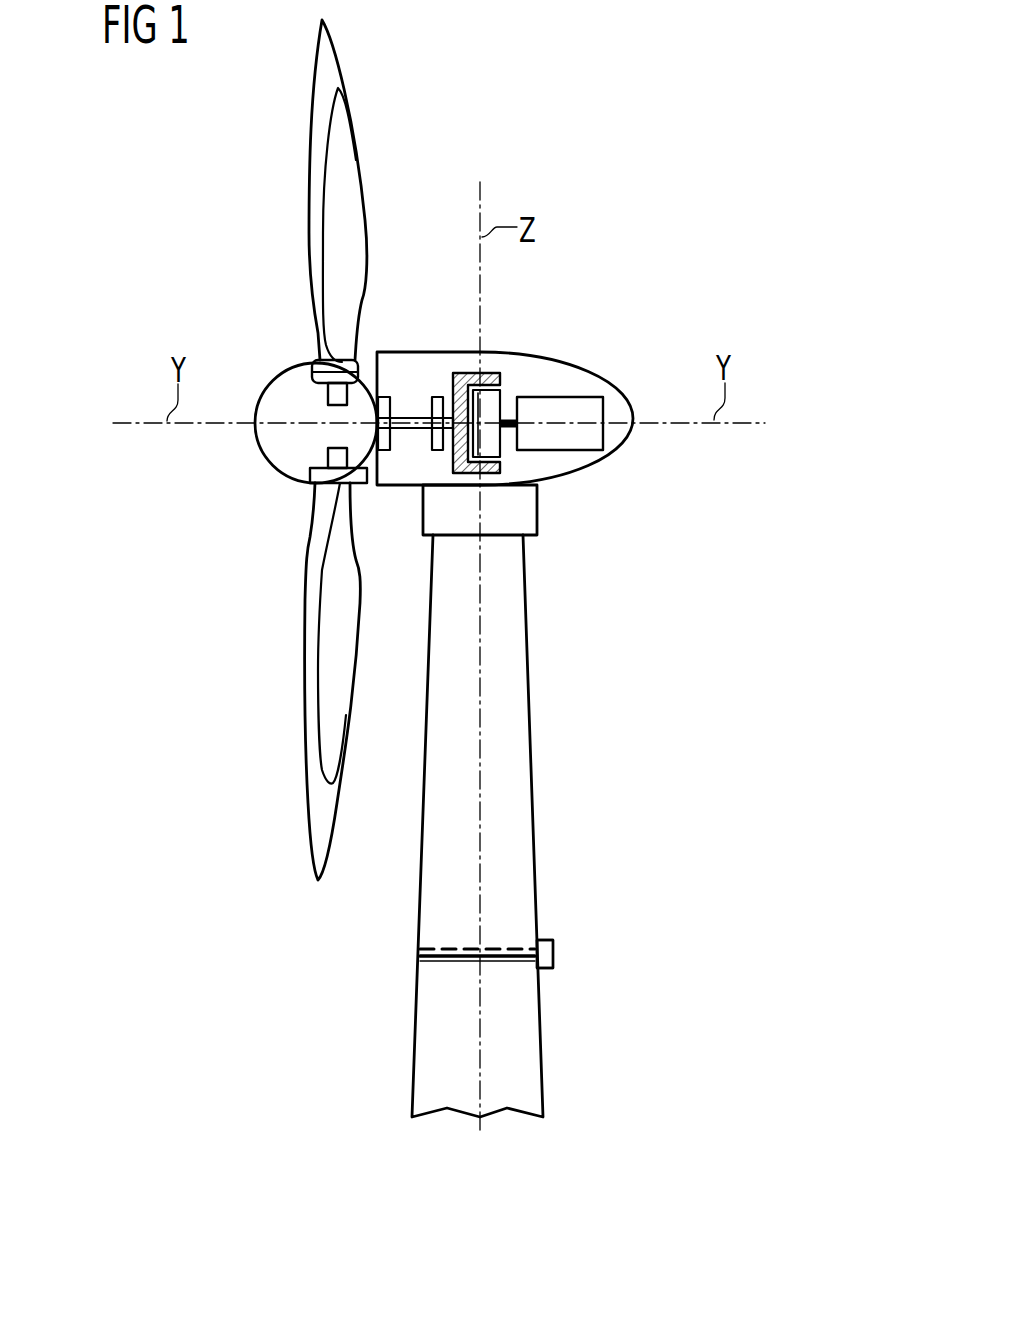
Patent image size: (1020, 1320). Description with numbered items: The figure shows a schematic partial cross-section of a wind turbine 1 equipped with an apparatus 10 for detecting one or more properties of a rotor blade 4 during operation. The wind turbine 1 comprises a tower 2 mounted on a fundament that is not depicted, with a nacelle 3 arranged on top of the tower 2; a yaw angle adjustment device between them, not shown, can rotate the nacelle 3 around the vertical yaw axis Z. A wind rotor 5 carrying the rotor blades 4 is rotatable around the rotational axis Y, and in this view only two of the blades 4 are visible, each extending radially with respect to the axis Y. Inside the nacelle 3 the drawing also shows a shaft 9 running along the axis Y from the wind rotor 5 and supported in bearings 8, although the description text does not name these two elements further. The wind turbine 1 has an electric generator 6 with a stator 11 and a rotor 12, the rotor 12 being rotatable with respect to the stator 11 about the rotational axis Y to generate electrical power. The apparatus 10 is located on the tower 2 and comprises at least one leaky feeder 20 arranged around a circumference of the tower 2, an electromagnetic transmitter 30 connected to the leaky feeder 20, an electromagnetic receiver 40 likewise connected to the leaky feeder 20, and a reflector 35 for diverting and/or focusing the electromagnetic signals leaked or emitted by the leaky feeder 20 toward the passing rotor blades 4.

The wind turbine 1 is at (690, 215).
The tower 2 is at (522, 780).
The nacelle 3 is at (613, 353).
The rotor blade 4 is at (312, 184).
The wind rotor 5 is at (249, 461).
The electric generator 6 is at (500, 352).
The bearings 8 is at (438, 397).
The rotor shaft 9 is at (398, 424).
The apparatus 10 is at (520, 935).
The stator 11 is at (492, 400).
The rotor 12 is at (459, 373).
The leaky feeder 20 is at (518, 961).
The electromagnetic transmitter 30 is at (552, 963).
The electromagnetic receiver 40 is at (545, 954).
The reflector 35 is at (432, 948).